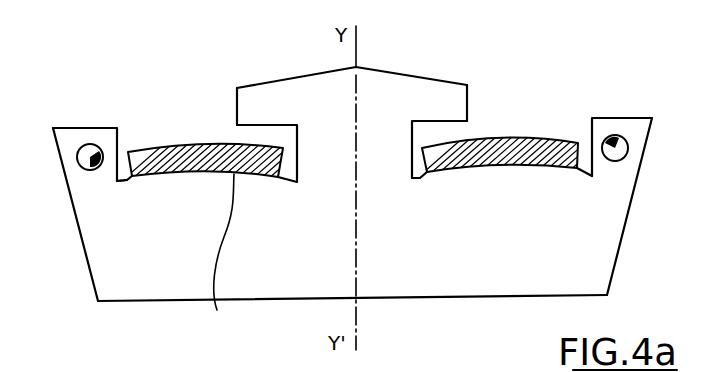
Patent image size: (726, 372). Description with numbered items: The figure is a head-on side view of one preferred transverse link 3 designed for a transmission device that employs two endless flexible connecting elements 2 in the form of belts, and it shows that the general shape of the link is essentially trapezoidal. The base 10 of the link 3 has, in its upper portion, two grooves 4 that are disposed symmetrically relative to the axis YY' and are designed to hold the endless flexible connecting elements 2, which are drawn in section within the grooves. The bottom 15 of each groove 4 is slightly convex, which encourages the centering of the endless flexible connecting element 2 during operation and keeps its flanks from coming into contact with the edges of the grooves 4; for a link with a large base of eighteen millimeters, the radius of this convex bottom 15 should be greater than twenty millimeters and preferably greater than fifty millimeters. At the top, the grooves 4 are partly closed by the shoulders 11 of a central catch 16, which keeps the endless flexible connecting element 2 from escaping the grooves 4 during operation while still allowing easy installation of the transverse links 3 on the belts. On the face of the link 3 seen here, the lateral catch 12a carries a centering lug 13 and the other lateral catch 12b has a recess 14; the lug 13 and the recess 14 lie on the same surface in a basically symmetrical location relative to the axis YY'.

The endless flexible connecting element 2 is at (152, 147).
The transverse link 3 is at (632, 212).
The groove 4 is at (125, 183).
The base 10 is at (575, 257).
The shoulder 11 is at (243, 105).
The lateral catch 12a is at (67, 135).
The lateral catch 12b is at (633, 128).
The centering lug 13 is at (80, 152).
The recess 14 is at (616, 150).
The bottom of the groove 15 is at (231, 256).
The central catch 16 is at (390, 83).